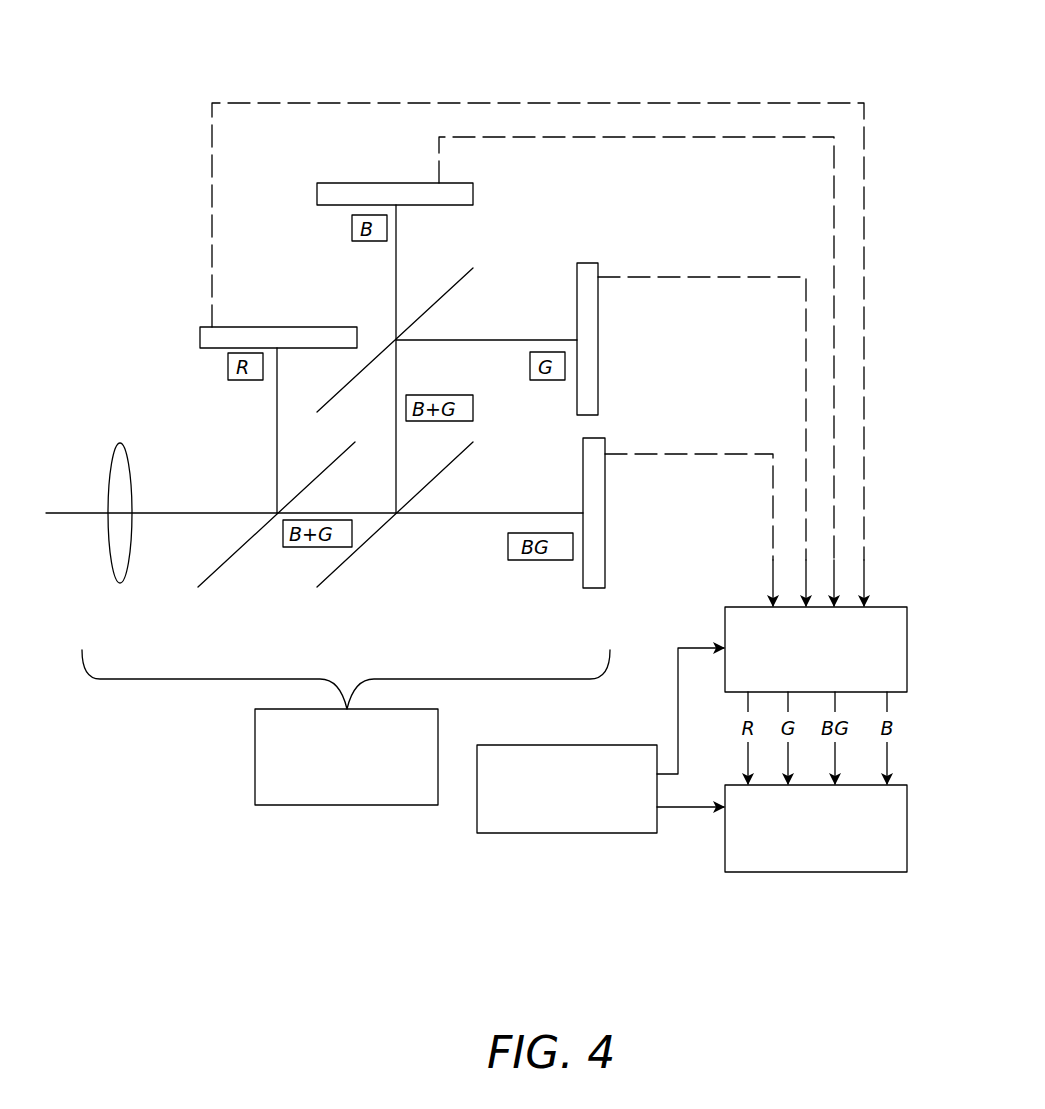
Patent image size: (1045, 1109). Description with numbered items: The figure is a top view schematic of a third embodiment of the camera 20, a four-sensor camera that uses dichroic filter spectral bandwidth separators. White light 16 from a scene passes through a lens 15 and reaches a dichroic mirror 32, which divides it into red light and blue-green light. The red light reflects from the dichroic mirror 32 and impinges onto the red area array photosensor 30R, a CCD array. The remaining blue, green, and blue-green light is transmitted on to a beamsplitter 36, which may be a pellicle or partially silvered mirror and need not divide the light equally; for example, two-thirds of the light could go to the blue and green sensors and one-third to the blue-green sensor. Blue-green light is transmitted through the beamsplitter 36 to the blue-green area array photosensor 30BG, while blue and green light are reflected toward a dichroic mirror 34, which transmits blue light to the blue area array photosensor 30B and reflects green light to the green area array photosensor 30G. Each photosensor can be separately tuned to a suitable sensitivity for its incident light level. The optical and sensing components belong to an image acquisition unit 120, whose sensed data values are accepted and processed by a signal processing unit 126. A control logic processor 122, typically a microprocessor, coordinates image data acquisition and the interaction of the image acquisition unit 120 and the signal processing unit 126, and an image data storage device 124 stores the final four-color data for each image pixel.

The camera 20 is at (186, 66).
The lens 15 is at (118, 585).
The white light 16 is at (80, 513).
The dichroic mirror 32 is at (238, 556).
The dichroic mirror 34 is at (455, 282).
The beamsplitter 36 is at (358, 555).
The red area array photosensor 30R is at (280, 327).
The blue area array photosensor 30B is at (396, 183).
The green area array photosensor 30G is at (598, 340).
The blue-green area array photosensor 30BG is at (605, 497).
The image acquisition unit 120 is at (345, 805).
The control logic processor 122 is at (562, 833).
The image data storage device 124 is at (750, 872).
The signal processing unit 126 is at (725, 632).